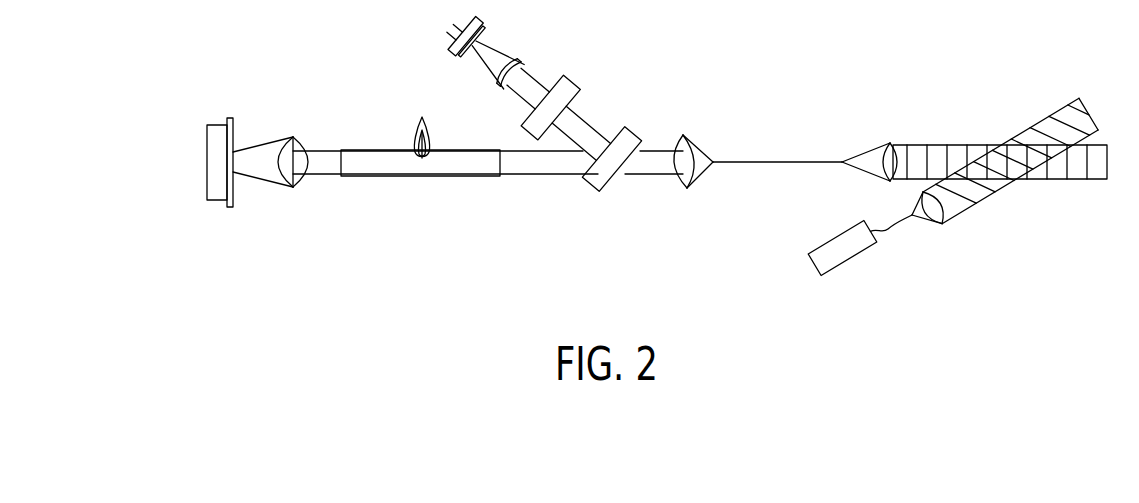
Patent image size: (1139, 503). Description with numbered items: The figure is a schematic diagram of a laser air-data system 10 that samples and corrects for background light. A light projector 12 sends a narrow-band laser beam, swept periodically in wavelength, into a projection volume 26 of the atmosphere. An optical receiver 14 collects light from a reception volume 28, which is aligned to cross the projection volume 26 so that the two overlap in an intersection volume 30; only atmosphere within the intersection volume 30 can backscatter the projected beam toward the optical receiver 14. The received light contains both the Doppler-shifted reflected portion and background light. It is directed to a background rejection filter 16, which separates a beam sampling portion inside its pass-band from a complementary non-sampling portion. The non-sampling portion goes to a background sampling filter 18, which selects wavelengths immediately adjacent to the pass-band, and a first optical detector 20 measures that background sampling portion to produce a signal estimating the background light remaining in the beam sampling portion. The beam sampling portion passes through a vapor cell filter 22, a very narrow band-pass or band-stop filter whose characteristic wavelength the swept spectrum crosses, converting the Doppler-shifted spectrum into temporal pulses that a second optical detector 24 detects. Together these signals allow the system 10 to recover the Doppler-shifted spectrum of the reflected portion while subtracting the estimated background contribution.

The laser air-data system 10 is at (124, 137).
The light projector 12 is at (874, 212).
The optical receiver 14 is at (822, 145).
The background rejection filter 16 is at (634, 132).
The background sampling filter 18 is at (573, 86).
The first optical detector 20 is at (465, 67).
The vapor cell filter 22 is at (400, 177).
The second optical detector 24 is at (207, 200).
The projection volume 26 is at (987, 196).
The reception volume 28 is at (945, 145).
The intersection volume 30 is at (1000, 158).